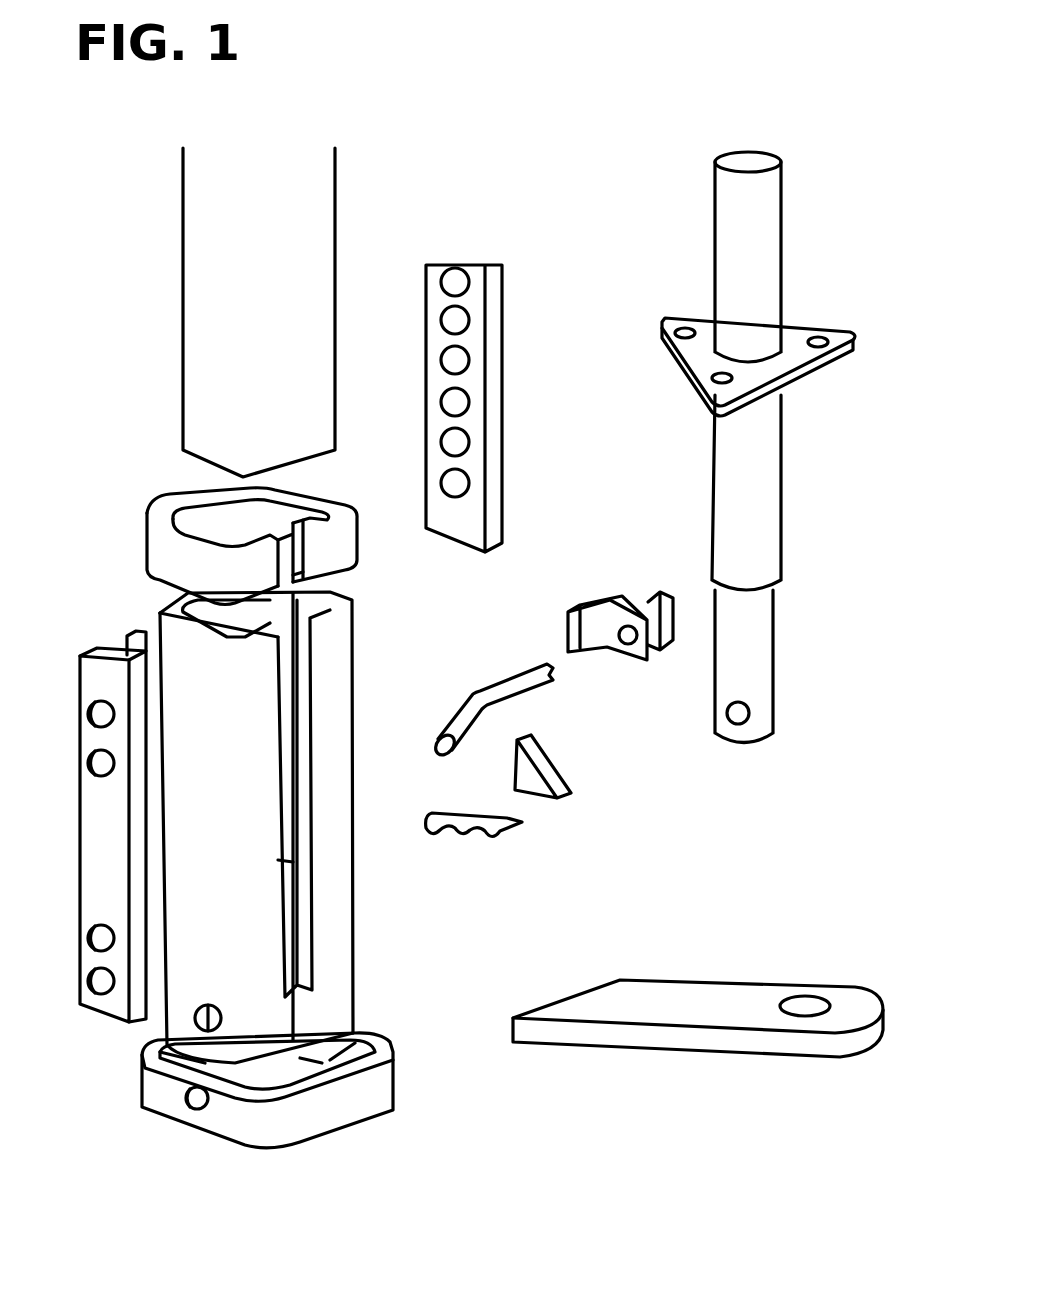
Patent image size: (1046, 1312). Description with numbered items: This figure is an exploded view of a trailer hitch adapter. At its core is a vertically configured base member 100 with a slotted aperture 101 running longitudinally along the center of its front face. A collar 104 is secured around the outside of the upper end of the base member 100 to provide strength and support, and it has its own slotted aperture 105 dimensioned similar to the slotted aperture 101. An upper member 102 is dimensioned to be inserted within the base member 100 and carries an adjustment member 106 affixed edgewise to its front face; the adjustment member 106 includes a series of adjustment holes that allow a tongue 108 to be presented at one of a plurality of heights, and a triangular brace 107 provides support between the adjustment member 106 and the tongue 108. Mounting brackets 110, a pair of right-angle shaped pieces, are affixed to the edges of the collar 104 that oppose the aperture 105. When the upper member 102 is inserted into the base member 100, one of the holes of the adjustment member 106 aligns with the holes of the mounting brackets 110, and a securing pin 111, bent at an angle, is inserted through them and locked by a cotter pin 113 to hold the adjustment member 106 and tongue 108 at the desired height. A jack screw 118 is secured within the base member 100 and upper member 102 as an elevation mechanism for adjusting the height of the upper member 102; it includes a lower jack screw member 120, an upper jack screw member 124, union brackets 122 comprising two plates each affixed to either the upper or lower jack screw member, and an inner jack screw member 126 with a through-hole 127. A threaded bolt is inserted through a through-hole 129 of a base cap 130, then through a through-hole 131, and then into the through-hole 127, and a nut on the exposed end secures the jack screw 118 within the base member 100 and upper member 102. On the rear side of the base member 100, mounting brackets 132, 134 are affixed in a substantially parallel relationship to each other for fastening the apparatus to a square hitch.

The base member 100 is at (342, 952).
The slotted aperture 101 is at (283, 862).
The upper member 102 is at (225, 304).
The collar 104 is at (170, 553).
The slotted aperture 105 is at (280, 563).
The adjustment member 106 is at (493, 322).
The triangular brace 107 is at (553, 773).
The tongue 108 is at (727, 997).
The mounting brackets 110 is at (595, 565).
The securing pin 111 is at (490, 698).
The cotter pin 113 is at (503, 827).
The jack screw 118 is at (675, 205).
The lower jack screw member 120 is at (730, 458).
The union brackets 122 is at (693, 345).
The upper jack screw member 124 is at (765, 287).
The inner jack screw member 126 is at (755, 668).
The through-hole 127 is at (727, 737).
The through-hole 129 is at (198, 1108).
The base cap 130 is at (157, 1098).
The through-hole 131 is at (190, 1018).
The mounting bracket 132 is at (131, 640).
The mounting bracket 134 is at (101, 847).